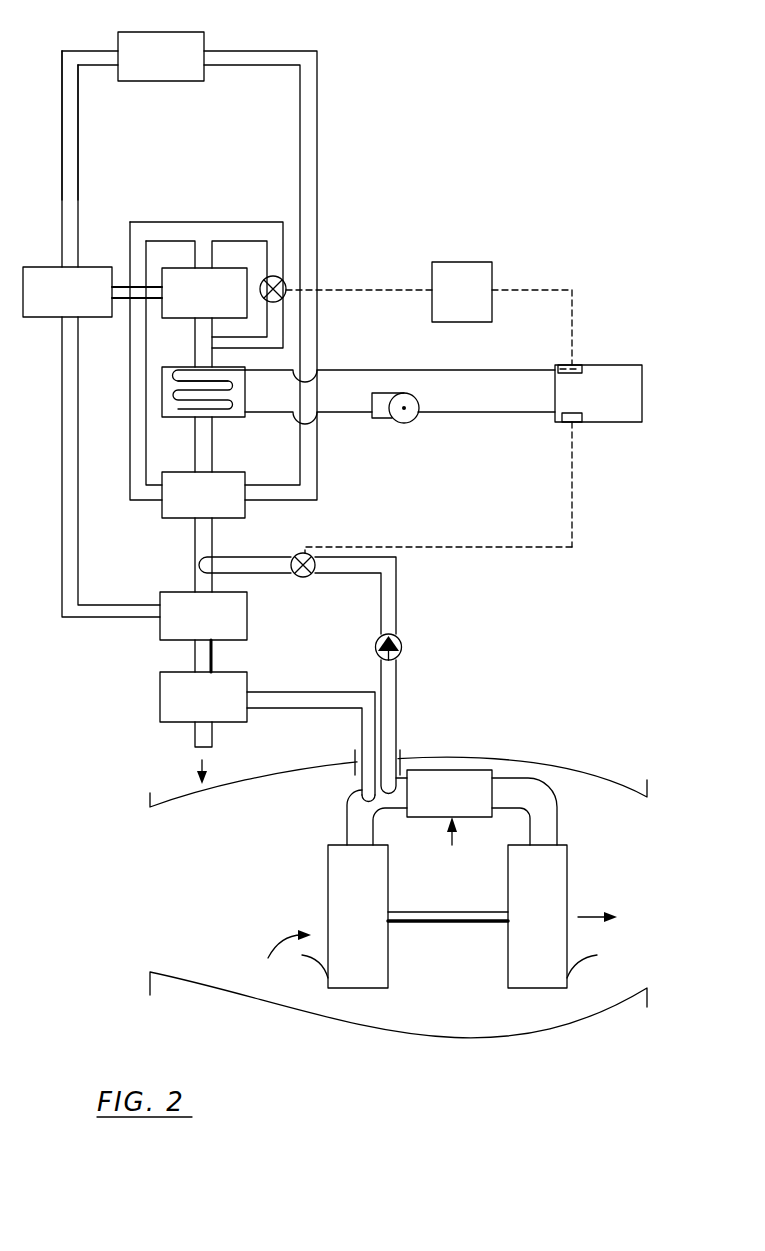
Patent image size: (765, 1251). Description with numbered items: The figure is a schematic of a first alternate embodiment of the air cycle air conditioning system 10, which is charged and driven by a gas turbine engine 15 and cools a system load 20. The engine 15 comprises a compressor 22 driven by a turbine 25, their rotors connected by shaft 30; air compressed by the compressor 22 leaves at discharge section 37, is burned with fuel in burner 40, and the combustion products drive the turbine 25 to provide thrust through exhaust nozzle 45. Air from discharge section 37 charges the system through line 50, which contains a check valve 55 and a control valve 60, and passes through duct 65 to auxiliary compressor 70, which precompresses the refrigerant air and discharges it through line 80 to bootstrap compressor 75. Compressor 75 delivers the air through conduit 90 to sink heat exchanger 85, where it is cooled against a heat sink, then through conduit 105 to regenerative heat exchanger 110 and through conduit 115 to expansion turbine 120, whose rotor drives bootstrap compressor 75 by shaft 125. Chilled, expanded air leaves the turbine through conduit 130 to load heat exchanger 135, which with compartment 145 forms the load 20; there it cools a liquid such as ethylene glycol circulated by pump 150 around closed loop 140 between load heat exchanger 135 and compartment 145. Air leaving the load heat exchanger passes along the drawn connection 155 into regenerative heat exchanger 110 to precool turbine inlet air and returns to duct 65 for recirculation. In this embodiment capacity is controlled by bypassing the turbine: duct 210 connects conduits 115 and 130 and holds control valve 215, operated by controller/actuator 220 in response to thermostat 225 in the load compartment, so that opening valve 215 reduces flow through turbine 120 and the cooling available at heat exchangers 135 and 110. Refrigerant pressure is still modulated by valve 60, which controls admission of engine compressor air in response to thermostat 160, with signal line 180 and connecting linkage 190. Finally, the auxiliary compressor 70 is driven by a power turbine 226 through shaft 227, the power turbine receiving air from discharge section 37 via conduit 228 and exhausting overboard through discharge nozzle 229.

The air cycle air conditioning system 10 is at (335, 122).
The gas turbine engine 15 is at (563, 1025).
The system load 20 is at (628, 475).
The compressor 22 is at (337, 975).
The turbine 25 is at (560, 855).
The shaft 30 is at (460, 913).
The discharge section 37 is at (350, 810).
The burner 40 is at (485, 768).
The exhaust nozzle 45 is at (597, 958).
The line 50 is at (385, 665).
The check valve 55 is at (400, 645).
The control valve 60 is at (295, 556).
The duct 65 is at (197, 575).
The auxiliary compressor 70 is at (162, 645).
The bootstrap compressor 75 is at (67, 292).
The line 80 is at (67, 425).
The sink heat exchanger 85 is at (198, 40).
The conduit 90 is at (67, 100).
The conduit 105 is at (307, 227).
The regenerative heat exchanger 110 is at (237, 477).
The conduit 115 is at (133, 472).
The expansion turbine 120 is at (204, 293).
The shaft 125 is at (122, 293).
The conduit 130 is at (198, 341).
The load heat exchanger 135 is at (163, 417).
The closed-loop 140 is at (333, 370).
The compartment 145 is at (557, 370).
The pump 150 is at (407, 427).
The conduit 155 is at (207, 447).
The sensor 160 is at (585, 423).
The line 180 is at (572, 472).
The line 190 is at (438, 547).
The duct 210 is at (275, 253).
The control valve 215 is at (283, 298).
The controller/actuator 220 is at (465, 265).
The thermostat 225 is at (577, 364).
The power turbine 226 is at (160, 712).
The shaft 227 is at (210, 658).
The conduit 228 is at (300, 702).
The discharge nozzle 229 is at (197, 737).